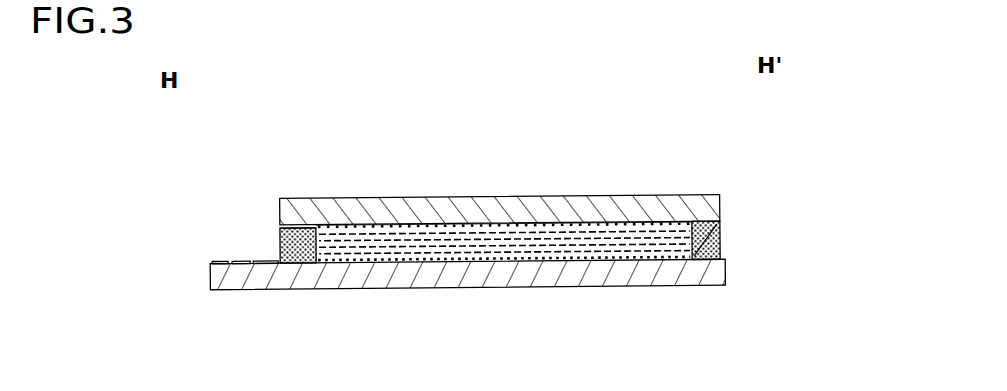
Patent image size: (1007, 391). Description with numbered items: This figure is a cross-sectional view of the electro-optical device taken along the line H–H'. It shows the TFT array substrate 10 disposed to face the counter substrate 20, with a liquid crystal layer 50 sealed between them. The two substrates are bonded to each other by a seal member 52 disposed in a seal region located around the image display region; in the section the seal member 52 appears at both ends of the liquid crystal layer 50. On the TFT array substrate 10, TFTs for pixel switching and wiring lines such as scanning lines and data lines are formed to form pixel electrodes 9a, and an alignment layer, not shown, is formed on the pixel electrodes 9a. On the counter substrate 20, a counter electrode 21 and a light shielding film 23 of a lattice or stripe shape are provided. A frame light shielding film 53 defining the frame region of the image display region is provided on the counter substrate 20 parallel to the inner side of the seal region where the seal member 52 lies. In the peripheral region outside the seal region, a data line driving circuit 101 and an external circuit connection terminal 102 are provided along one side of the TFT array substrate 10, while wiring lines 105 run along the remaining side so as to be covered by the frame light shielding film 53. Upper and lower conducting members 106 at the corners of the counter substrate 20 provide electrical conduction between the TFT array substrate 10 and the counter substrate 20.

The TFT array substrate 10 is at (535, 272).
The counter substrate 20 is at (500, 160).
The counter electrode 21 is at (567, 218).
The light shielding film 23 is at (517, 223).
The liquid crystal layer 50 is at (430, 247).
The seal member 52 is at (279, 228).
The frame light shielding film 53 is at (323, 225).
The pixel electrode 9a is at (378, 263).
The data line driving circuit 101 is at (250, 262).
The external circuit connection terminal 102 is at (218, 262).
The wiring line 105 is at (718, 238).
The upper and lower conducting member 106 is at (282, 263).